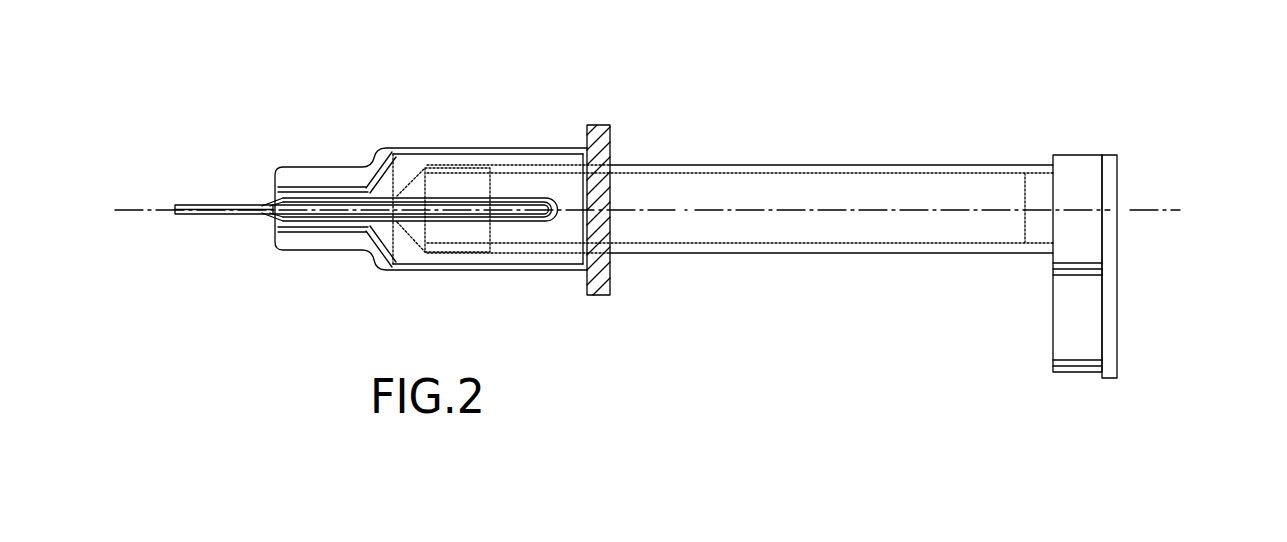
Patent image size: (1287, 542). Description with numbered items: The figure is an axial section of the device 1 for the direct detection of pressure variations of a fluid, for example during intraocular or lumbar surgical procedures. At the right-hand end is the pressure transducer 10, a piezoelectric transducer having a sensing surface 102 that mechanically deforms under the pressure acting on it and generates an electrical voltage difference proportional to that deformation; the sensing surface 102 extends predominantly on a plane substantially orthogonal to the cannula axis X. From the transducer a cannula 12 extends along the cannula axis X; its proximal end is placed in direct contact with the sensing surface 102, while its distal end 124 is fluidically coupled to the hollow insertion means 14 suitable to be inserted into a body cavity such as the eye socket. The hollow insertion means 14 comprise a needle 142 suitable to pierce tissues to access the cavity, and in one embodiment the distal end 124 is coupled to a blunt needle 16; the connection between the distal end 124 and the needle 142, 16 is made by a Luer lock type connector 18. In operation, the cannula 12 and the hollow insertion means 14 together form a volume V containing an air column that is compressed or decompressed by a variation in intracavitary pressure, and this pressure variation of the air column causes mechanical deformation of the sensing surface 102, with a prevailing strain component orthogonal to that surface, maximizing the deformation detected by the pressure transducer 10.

The device for the direct detection of pressure variations 1 is at (1187, 93).
The pressure transducer 10 is at (1122, 285).
The sensing surface 102 is at (1053, 323).
The cannula 12 is at (805, 153).
The distal end 124 is at (508, 162).
The hollow insertion means 14 is at (185, 172).
The needle 142 is at (217, 205).
The blunt needle 16 is at (205, 220).
The Luer lock type connector 18 is at (442, 138).
The volume V is at (800, 227).
The cannula axis X is at (1177, 208).